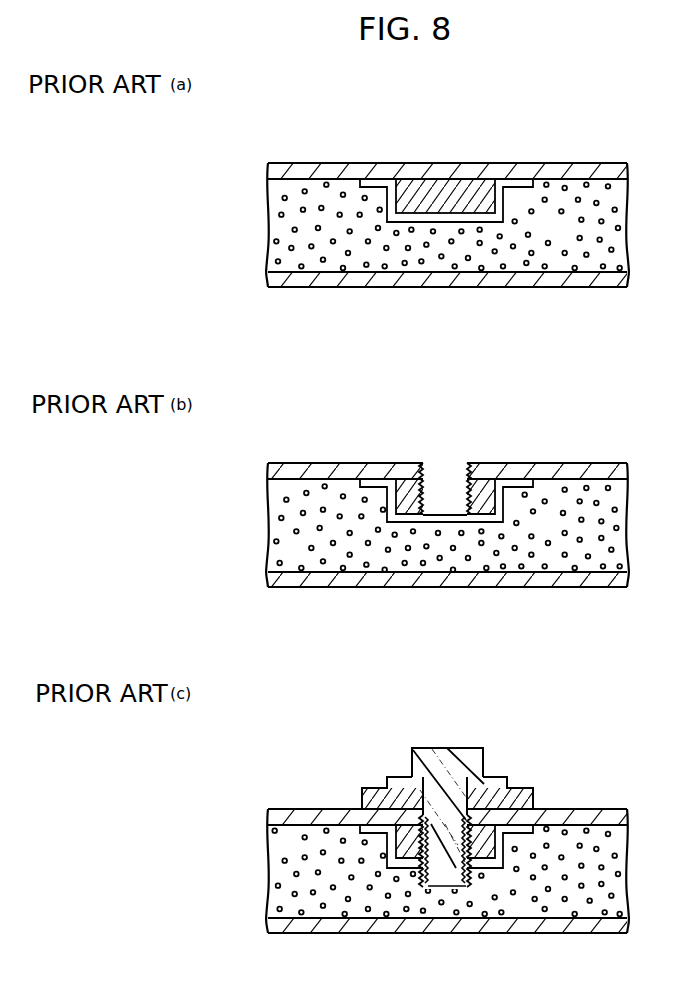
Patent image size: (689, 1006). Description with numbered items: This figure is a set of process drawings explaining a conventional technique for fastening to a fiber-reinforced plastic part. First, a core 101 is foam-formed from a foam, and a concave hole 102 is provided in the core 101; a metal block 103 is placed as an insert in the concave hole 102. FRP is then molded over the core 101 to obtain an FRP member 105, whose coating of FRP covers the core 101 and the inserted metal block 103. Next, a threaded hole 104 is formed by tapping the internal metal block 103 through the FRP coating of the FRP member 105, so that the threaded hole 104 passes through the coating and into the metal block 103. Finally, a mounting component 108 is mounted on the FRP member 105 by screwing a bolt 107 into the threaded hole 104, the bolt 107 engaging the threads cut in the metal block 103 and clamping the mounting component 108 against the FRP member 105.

The core 101 is at (268, 228).
The concave hole 102 is at (510, 205).
The metal block 103 is at (442, 190).
The threaded hole 104 is at (465, 480).
The FRP member 105 is at (264, 462).
The bolt 107 is at (446, 747).
The mounting component 108 is at (530, 786).